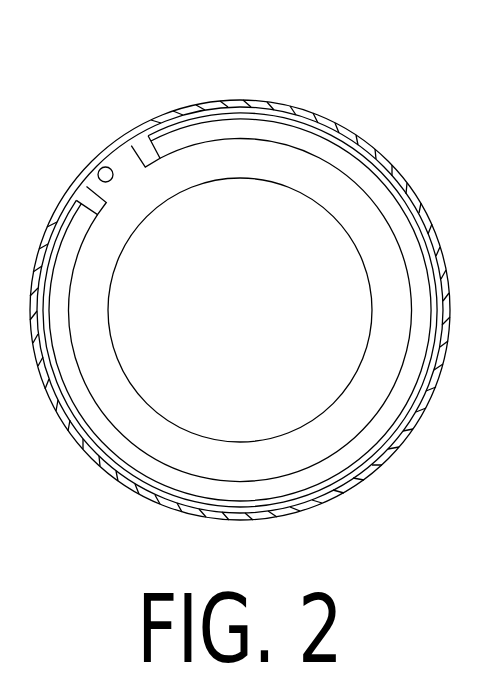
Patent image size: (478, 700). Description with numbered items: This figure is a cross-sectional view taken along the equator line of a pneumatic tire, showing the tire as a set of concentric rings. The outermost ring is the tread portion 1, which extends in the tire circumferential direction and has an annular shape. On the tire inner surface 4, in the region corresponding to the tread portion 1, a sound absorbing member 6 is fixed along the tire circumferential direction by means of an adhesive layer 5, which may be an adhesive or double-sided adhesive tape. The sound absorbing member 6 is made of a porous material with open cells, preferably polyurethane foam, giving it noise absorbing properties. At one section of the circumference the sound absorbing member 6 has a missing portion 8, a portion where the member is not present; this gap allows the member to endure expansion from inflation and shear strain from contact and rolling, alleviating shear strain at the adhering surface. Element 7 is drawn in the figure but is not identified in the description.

The tread portion 1 is at (382, 142).
The tire inner surface 4 is at (101, 160).
The adhesive layer 5 is at (239, 112).
The sound absorbing member 6 is at (170, 128).
The inner ring 7 is at (305, 173).
The missing portion 8 is at (128, 177).